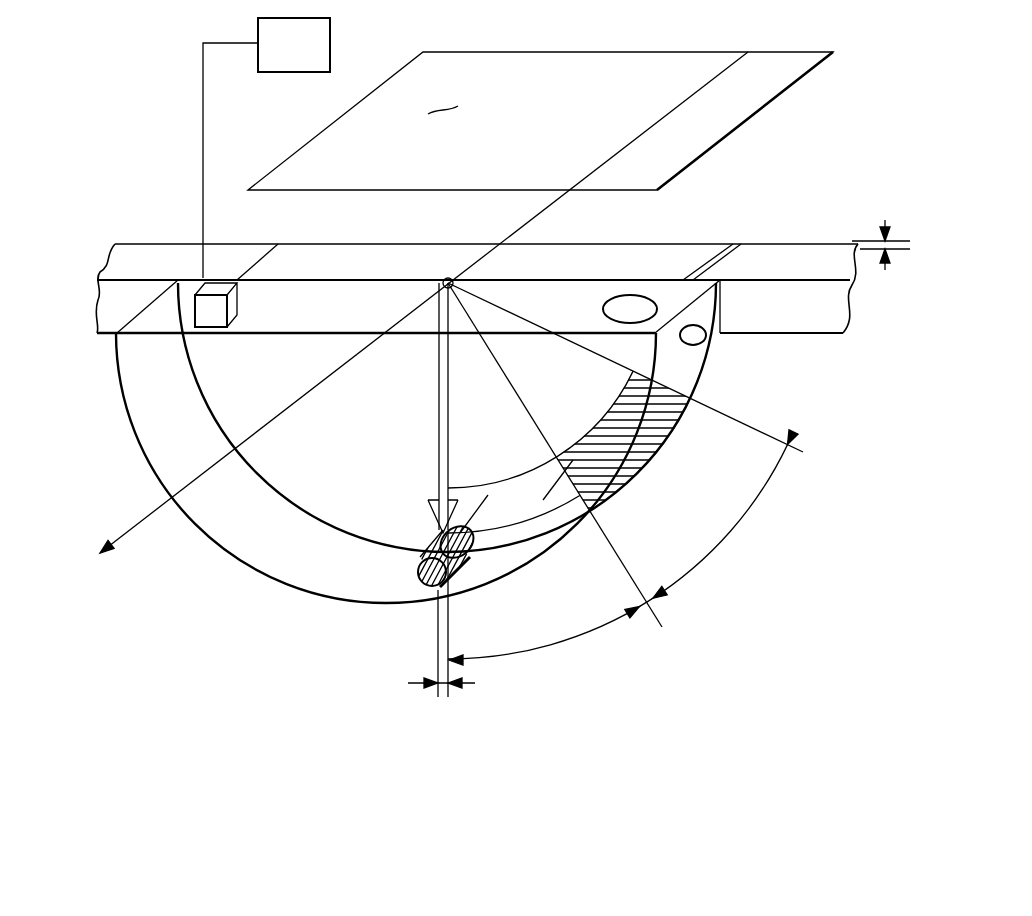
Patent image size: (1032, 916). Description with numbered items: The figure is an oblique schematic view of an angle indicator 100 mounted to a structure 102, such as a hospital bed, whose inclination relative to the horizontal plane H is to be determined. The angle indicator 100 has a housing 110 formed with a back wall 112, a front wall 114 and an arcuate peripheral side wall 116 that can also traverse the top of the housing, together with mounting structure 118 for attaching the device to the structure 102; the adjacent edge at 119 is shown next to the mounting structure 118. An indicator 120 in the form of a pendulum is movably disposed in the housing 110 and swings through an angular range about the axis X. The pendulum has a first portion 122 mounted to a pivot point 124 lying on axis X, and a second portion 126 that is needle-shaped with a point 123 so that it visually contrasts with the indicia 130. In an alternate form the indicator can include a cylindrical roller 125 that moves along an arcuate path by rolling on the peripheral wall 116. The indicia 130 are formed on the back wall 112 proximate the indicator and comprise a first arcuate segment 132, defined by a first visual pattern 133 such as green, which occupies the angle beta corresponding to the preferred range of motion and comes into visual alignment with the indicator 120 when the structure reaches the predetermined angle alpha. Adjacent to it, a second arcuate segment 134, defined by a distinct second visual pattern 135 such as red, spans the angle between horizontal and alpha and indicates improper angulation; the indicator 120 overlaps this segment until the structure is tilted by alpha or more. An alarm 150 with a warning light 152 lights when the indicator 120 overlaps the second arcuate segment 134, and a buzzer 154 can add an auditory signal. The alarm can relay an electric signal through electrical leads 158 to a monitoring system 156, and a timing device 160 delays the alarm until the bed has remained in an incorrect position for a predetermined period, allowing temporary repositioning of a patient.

The angle indicator 100 is at (195, 583).
The structure 102 is at (125, 304).
The housing 110 is at (113, 380).
The back wall 112 is at (410, 400).
The front wall 114 is at (256, 358).
The peripheral side wall 116 is at (326, 320).
The mounting structure 118 is at (674, 262).
The slot edge 119 is at (742, 244).
The indicator 120 is at (389, 490).
The first portion 122 is at (440, 313).
The point 123 is at (418, 530).
The pivot point 124 is at (449, 279).
The cylindrical roller 125 is at (427, 590).
The second portion 126 is at (410, 497).
The indicia 130 is at (576, 424).
The first arcuate segment 132 is at (622, 420).
The first visual pattern 133 is at (575, 463).
The second arcuate segment 134 is at (480, 490).
The second visual pattern 135 is at (537, 518).
The alarm 150 is at (765, 348).
The warning light 152 is at (697, 343).
The buzzer 154 is at (630, 300).
The monitoring system 156 is at (327, 55).
The electrical leads 158 is at (205, 122).
The timing device 160 is at (197, 313).